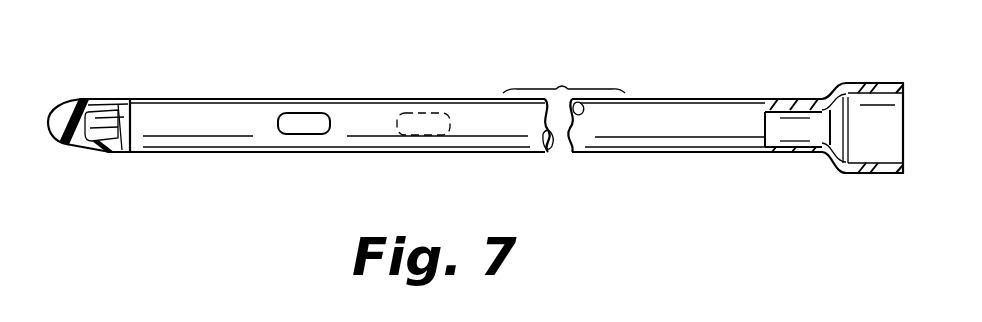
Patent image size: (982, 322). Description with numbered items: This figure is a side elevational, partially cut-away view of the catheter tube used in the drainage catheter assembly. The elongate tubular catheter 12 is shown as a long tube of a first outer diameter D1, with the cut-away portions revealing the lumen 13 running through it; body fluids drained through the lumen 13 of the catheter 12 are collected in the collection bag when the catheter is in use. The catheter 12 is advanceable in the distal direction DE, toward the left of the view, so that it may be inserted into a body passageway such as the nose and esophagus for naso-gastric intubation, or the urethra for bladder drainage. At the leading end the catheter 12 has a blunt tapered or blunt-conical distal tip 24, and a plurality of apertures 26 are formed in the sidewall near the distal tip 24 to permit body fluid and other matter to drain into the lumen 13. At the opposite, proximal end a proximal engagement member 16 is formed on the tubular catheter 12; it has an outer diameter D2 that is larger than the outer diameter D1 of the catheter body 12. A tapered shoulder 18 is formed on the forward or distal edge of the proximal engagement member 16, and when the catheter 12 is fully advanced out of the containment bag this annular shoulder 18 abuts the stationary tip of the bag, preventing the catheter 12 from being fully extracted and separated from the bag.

The elongate tubular catheter 12 is at (472, 99).
The lumen 13 is at (120, 130).
The proximal engagement member 16 is at (846, 175).
The tapered shoulder 18 is at (827, 90).
The distal tip 24 is at (63, 112).
The apertures 26 is at (301, 118).
The first outer diameter D1 is at (161, 197).
The outer diameter of proximal engagement member D2 is at (883, 213).
The distal direction DE is at (83, 173).